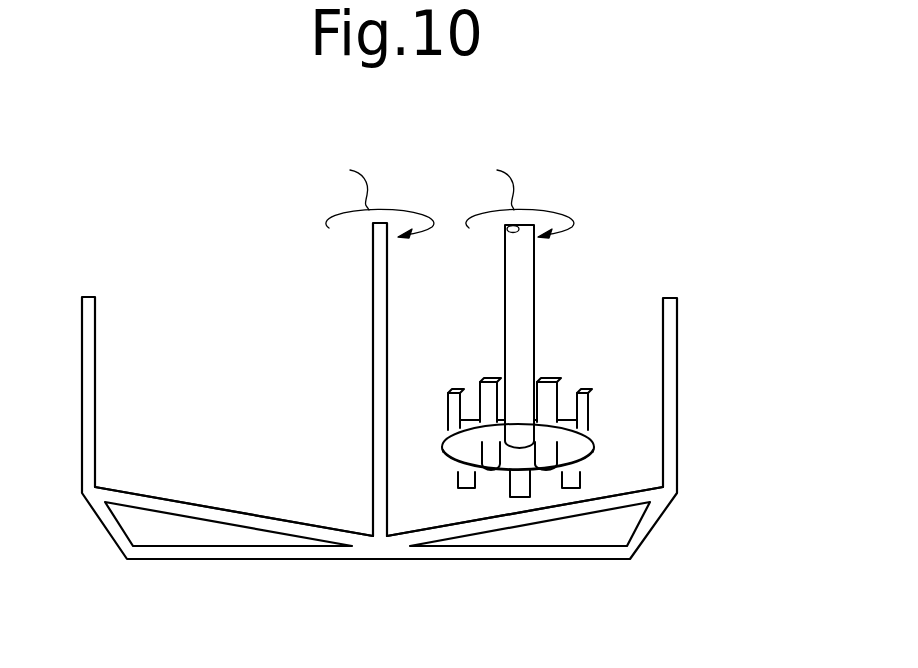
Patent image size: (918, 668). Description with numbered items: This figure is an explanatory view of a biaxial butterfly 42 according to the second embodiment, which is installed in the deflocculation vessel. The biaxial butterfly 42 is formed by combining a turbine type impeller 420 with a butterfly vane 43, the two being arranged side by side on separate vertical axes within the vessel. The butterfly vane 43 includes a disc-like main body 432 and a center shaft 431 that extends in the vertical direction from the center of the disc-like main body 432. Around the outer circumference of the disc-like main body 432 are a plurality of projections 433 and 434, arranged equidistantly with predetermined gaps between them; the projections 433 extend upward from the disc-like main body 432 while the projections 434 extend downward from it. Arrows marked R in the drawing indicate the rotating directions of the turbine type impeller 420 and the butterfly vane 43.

The biaxial butterfly 42 is at (379, 356).
The turbine type impeller 420 is at (367, 543).
The butterfly vane 43 is at (594, 346).
The center shaft 431 is at (518, 276).
The disc-like main body 432 is at (468, 424).
The projections 433 is at (594, 440).
The projections 434 is at (570, 473).